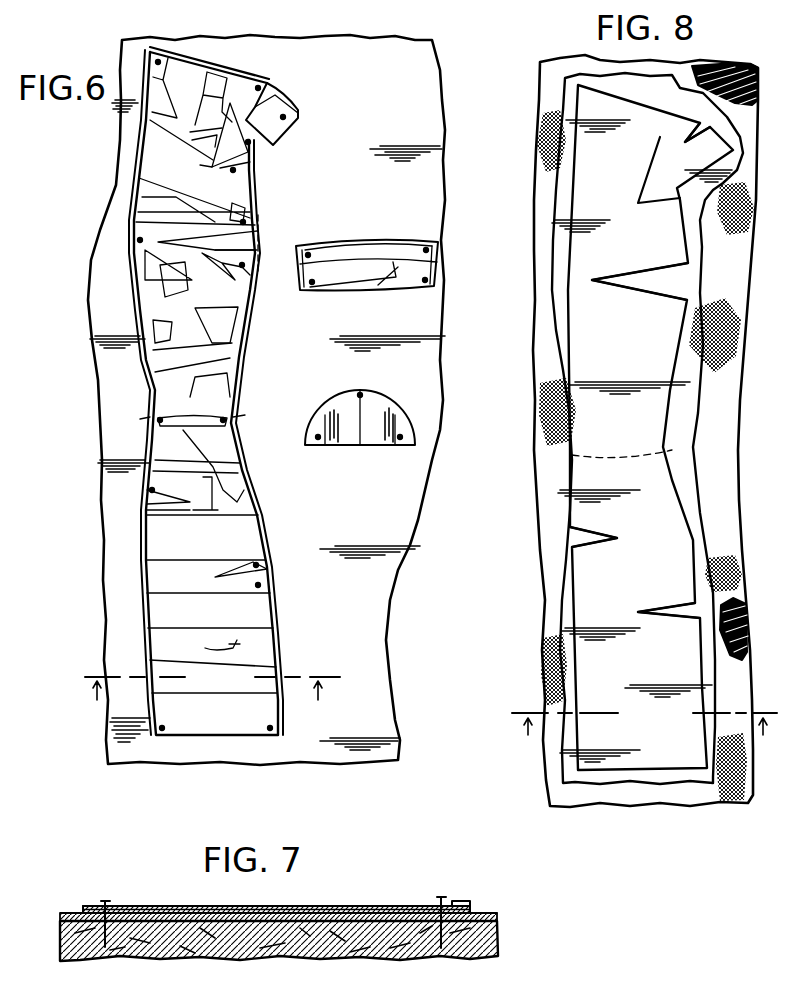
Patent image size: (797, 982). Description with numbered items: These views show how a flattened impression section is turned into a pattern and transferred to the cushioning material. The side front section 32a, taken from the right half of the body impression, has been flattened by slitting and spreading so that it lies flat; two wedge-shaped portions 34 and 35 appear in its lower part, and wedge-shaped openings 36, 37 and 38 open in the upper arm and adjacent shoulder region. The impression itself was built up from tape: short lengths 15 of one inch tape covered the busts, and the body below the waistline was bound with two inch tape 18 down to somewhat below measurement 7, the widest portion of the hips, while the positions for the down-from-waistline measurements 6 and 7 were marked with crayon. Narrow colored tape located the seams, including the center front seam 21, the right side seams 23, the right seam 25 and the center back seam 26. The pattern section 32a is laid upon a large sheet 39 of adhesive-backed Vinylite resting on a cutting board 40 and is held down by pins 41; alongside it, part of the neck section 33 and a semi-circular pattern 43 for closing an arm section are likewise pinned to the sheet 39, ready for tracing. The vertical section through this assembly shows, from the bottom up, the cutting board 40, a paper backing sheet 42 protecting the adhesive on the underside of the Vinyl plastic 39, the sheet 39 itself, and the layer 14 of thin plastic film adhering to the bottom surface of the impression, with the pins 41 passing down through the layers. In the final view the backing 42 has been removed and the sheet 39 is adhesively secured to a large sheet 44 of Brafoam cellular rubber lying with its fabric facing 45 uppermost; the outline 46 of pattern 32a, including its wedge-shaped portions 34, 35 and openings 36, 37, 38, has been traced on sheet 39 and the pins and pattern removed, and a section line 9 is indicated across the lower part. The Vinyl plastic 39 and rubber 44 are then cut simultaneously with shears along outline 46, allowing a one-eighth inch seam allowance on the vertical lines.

In FIG. 6, the down-from-waistline measurement 6 is at (200, 507).
In FIG. 6, the hip measurement 7 is at (214, 648).
In FIG. 8, the section line 9 is at (644, 737).
In FIG. 7, the thin plastic film layer 14 is at (285, 905).
In FIG. 6, the one inch tape lengths 15 is at (160, 272).
In FIG. 6, the two inch tape 18 is at (263, 665).
In FIG. 7, the two inch tape 18 is at (355, 905).
In FIG. 6, the center front seam 21 is at (438, 262).
In FIG. 6, the right side seams 23 is at (148, 612).
In FIG. 7, the right side seams 23 is at (101, 905).
In FIG. 7, the right seam 25 is at (460, 901).
In FIG. 6, the center back seam 26 is at (258, 272).
In FIG. 6, the side front section 32a is at (169, 389).
In FIG. 8, the side front section 32a is at (668, 486).
In FIG. 7, the side front section 32a is at (227, 896).
In FIG. 6, the neck section 33 is at (377, 246).
In FIG. 6, the wedge-shaped portion 34 is at (258, 567).
In FIG. 8, the wedge-shaped portion 34 is at (692, 610).
In FIG. 6, the wedge-shaped portion 35 is at (148, 506).
In FIG. 8, the wedge-shaped portion 35 is at (596, 541).
In FIG. 6, the wedge-shaped opening 36 is at (258, 240).
In FIG. 8, the wedge-shaped opening 36 is at (662, 278).
In FIG. 6, the wedge-shaped opening 37 is at (212, 146).
In FIG. 8, the wedge-shaped opening 37 is at (648, 176).
In FIG. 6, the wedge-shaped opening 38 is at (266, 92).
In FIG. 8, the wedge-shaped opening 38 is at (692, 127).
In FIG. 6, the adhesive-backed Vinylite sheet 39 is at (420, 76).
In FIG. 8, the adhesive-backed Vinylite sheet 39 is at (702, 273).
In FIG. 7, the adhesive-backed Vinylite sheet 39 is at (485, 913).
In FIG. 7, the cutting board 40 is at (498, 944).
In FIG. 6, the pins 41 is at (264, 132).
In FIG. 7, the pins 41 is at (106, 901).
In FIG. 7, the paper backing sheet 42 is at (499, 917).
In FIG. 6, the semi-circular pattern 43 is at (392, 395).
In FIG. 8, the Brafoam sheet 44 is at (726, 66).
In FIG. 8, the fabric facing 45 is at (708, 360).
In FIG. 8, the traced outline 46 is at (575, 358).